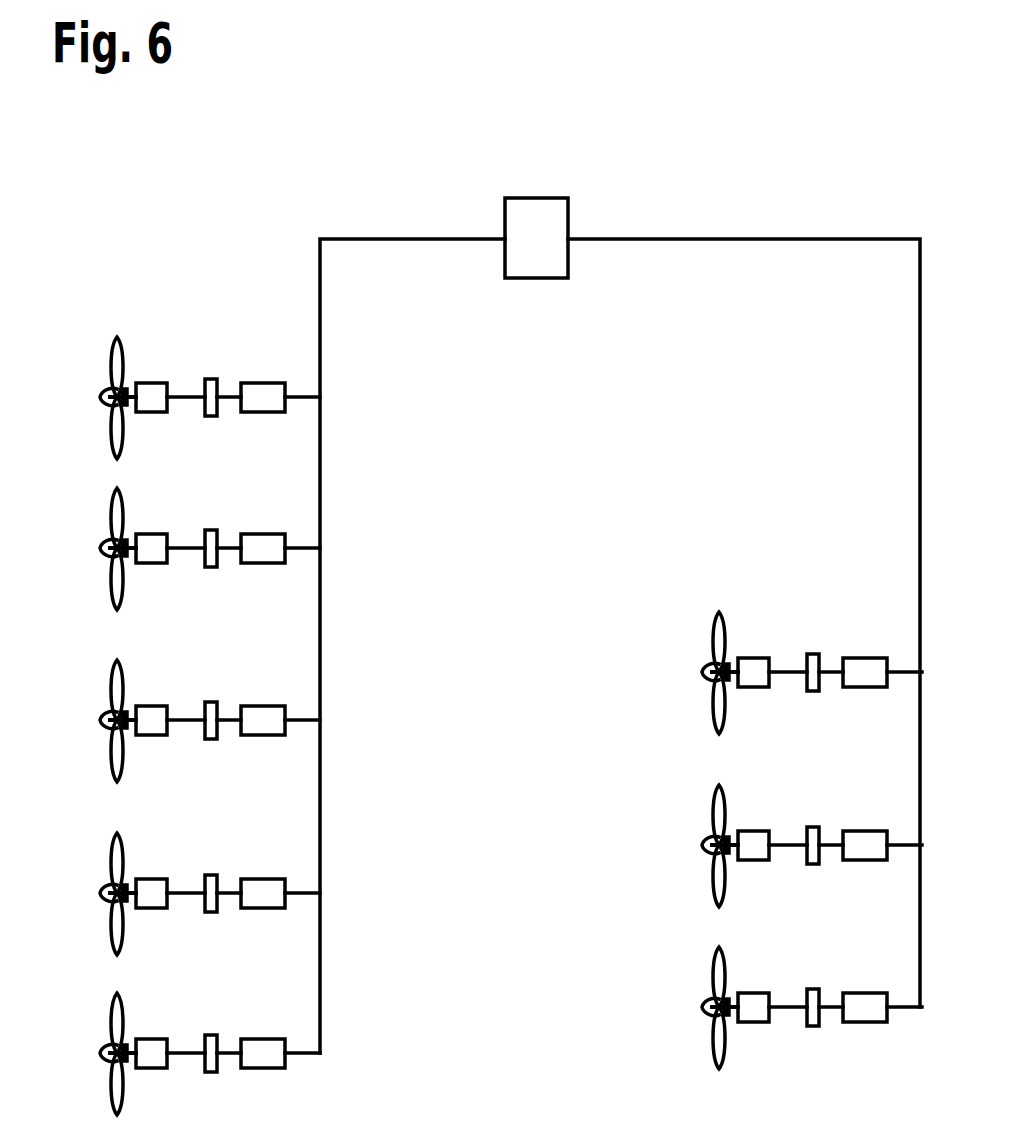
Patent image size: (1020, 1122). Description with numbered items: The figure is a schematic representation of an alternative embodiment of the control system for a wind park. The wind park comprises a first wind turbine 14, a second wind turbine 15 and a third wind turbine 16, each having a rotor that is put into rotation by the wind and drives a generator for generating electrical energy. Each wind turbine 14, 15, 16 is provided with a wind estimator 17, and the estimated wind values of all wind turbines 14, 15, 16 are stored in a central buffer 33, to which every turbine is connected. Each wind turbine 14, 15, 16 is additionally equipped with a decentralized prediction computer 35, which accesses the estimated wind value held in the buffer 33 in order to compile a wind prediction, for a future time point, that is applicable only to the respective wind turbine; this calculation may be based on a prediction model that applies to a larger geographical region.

The first wind turbine 14 is at (86, 559).
The second wind turbine 15 is at (86, 721).
The third wind turbine 16 is at (689, 840).
The wind estimator 17 is at (513, 672).
The central buffer 33 is at (540, 198).
The decentralized prediction computer 35 is at (564, 670).